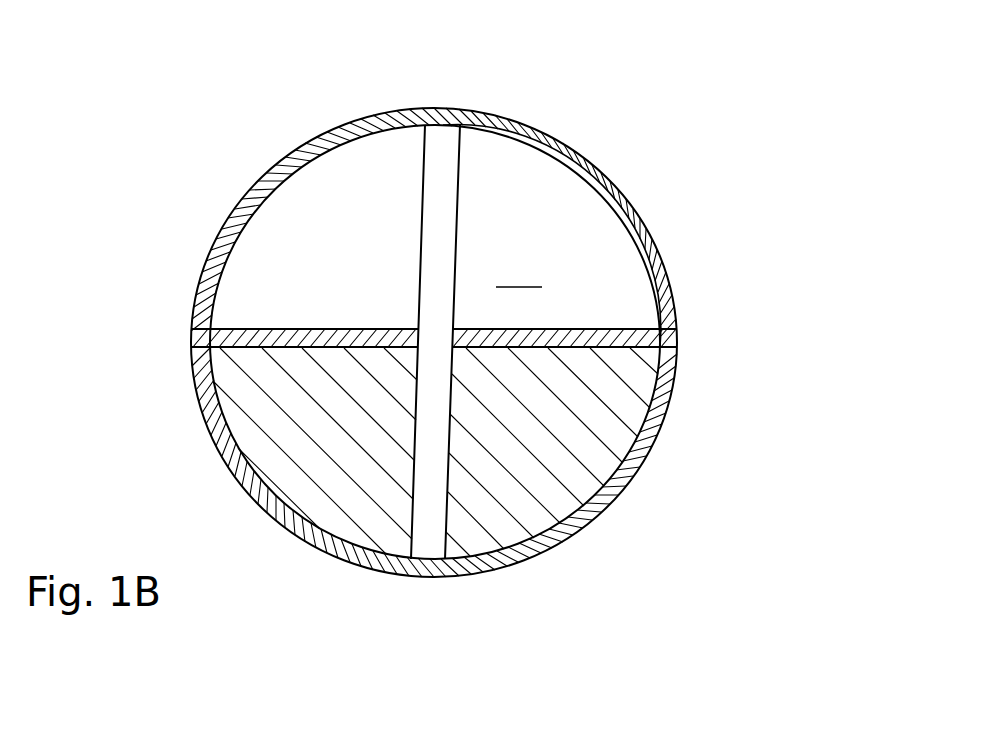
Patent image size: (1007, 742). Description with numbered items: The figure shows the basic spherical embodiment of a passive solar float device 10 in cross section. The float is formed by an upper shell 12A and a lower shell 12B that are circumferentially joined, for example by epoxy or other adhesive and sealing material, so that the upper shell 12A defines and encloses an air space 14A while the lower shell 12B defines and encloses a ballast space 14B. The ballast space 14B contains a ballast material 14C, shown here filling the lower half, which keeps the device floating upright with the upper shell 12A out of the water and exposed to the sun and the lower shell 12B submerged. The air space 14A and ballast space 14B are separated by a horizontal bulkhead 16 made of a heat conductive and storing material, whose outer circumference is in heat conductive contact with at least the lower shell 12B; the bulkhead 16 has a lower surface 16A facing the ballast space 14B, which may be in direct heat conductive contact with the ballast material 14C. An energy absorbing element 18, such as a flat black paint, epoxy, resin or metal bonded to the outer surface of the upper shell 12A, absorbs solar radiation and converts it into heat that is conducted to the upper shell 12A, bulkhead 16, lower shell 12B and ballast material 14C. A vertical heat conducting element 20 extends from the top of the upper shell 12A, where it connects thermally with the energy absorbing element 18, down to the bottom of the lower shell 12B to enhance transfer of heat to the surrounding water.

The solar float device 10 is at (717, 269).
The upper shell 12A is at (626, 190).
The lower shell 12B is at (567, 532).
The air space 14A is at (520, 272).
The ballast space 14B is at (337, 517).
The ballast material 14C is at (570, 443).
The horizontal bulkhead 16 is at (282, 331).
The lower surface 16A is at (213, 379).
The energy absorbing element 18 is at (611, 192).
The vertical heat conducting element 20 is at (432, 216).